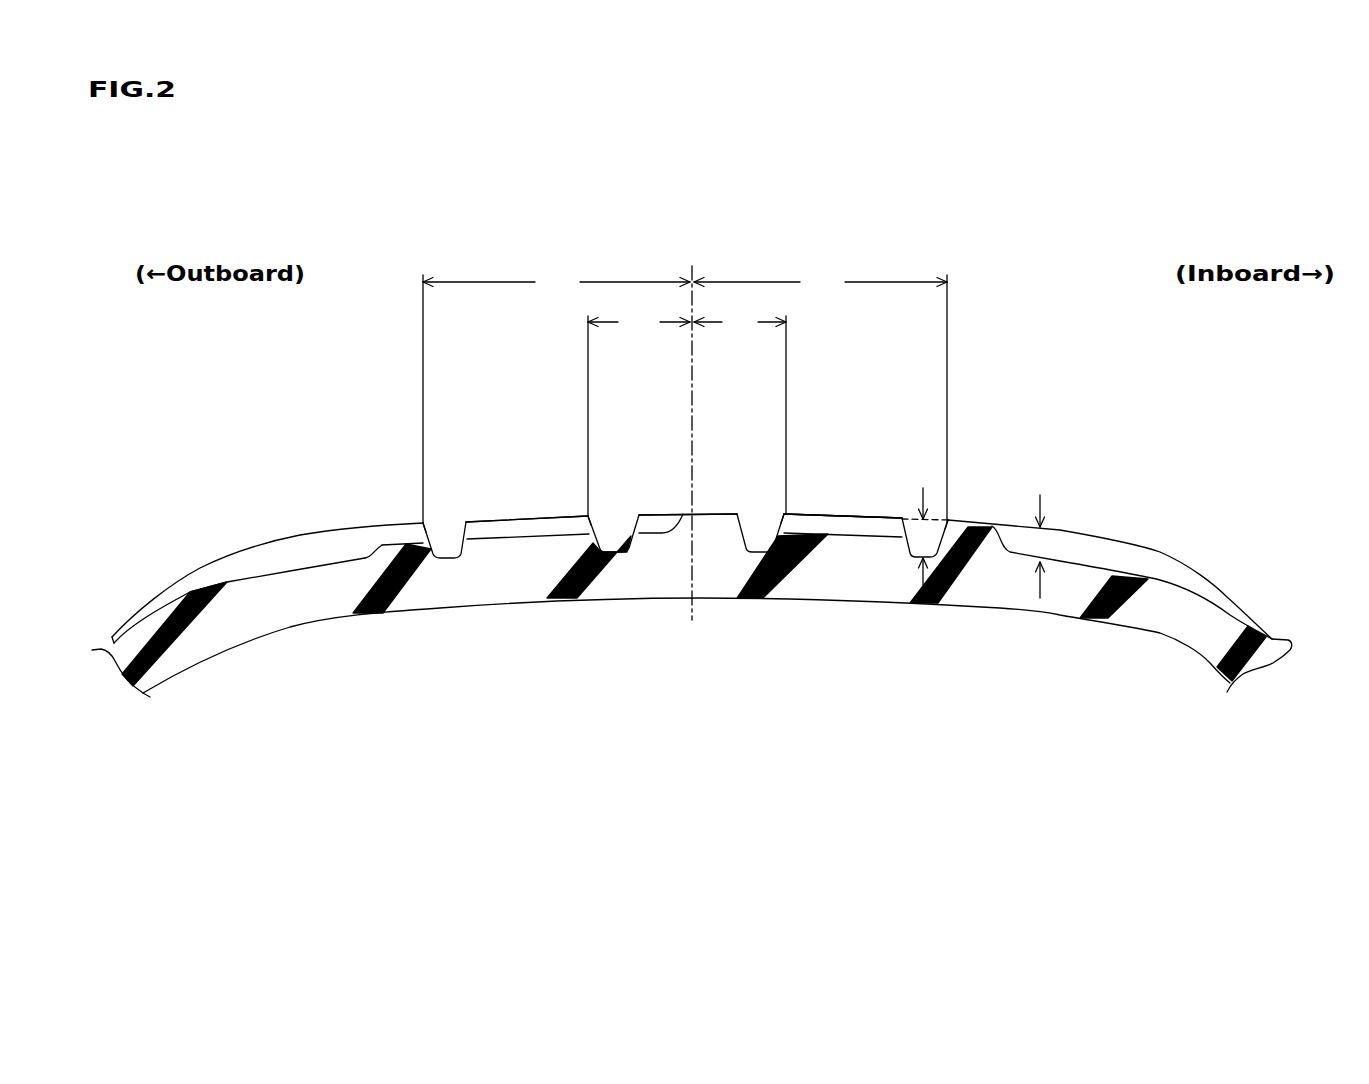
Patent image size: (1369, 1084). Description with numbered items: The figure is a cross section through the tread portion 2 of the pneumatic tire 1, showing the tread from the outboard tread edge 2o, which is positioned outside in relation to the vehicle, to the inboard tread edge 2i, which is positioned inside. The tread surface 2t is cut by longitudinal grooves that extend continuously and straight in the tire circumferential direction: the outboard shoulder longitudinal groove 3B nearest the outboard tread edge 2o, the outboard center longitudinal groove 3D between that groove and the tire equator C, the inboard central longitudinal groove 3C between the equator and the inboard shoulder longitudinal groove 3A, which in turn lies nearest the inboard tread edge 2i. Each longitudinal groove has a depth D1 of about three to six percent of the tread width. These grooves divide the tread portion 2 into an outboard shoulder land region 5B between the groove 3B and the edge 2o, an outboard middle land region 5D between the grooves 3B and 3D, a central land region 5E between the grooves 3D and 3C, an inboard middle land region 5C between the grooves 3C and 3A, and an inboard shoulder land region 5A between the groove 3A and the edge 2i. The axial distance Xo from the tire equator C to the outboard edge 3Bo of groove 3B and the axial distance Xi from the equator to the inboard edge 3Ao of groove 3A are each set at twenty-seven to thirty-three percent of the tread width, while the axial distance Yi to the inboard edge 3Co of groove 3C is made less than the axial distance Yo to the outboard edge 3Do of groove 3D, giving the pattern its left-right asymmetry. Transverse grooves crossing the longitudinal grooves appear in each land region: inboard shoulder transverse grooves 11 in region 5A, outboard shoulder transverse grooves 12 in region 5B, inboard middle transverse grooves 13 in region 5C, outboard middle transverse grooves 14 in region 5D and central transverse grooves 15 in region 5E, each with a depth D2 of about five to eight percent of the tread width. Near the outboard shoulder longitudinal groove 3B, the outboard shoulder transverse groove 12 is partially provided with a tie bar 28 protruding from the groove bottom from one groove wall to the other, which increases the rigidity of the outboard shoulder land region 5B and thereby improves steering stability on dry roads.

The pneumatic tire 1 is at (1132, 407).
The tread portion 2 is at (1060, 443).
The tread surface 2t is at (875, 516).
The outboard tread edge 2o is at (223, 552).
The inboard tread edge 2i is at (1160, 552).
The inboard shoulder longitudinal groove 3A is at (912, 551).
The outboard shoulder longitudinal groove 3B is at (457, 547).
The inboard central longitudinal groove 3C is at (756, 548).
The outboard center longitudinal groove 3D is at (621, 549).
The inboard edge of the inboard shoulder longitudinal groove 3Ao is at (950, 521).
The outboard edge of the outboard shoulder longitudinal groove 3Bo is at (423, 525).
The inboard edge of the inboard central longitudinal groove 3Co is at (786, 516).
The outboard edge of the outboard center longitudinal groove 3Do is at (588, 518).
The inboard shoulder land region 5A is at (981, 520).
The outboard shoulder land region 5B is at (330, 527).
The inboard middle land region 5C is at (853, 514).
The outboard middle land region 5D is at (528, 516).
The central land region 5E is at (663, 512).
The inboard shoulder transverse grooves 11 is at (1071, 566).
The outboard shoulder transverse grooves 12 is at (315, 567).
The inboard middle transverse grooves 13 is at (816, 537).
The outboard middle transverse grooves 14 is at (523, 539).
The central transverse grooves 15 is at (663, 538).
The tie bar 28 is at (405, 548).
The depth of the longitudinal grooves D1 is at (923, 540).
The depth of the transverse grooves D2 is at (1045, 560).
The tire equator C is at (690, 431).
The axial distance from the tire equator to the outboard edge of the outboard should Xo is at (556, 396).
The axial distance from the tire equator to the inboard edge of the inboard shoulder Xi is at (820, 396).
The axial distance from the tire equator to the outboard edge of the outboard center Yo is at (639, 413).
The axial distance from the tire equator to the inboard edge of the inboard central Yi is at (740, 412).